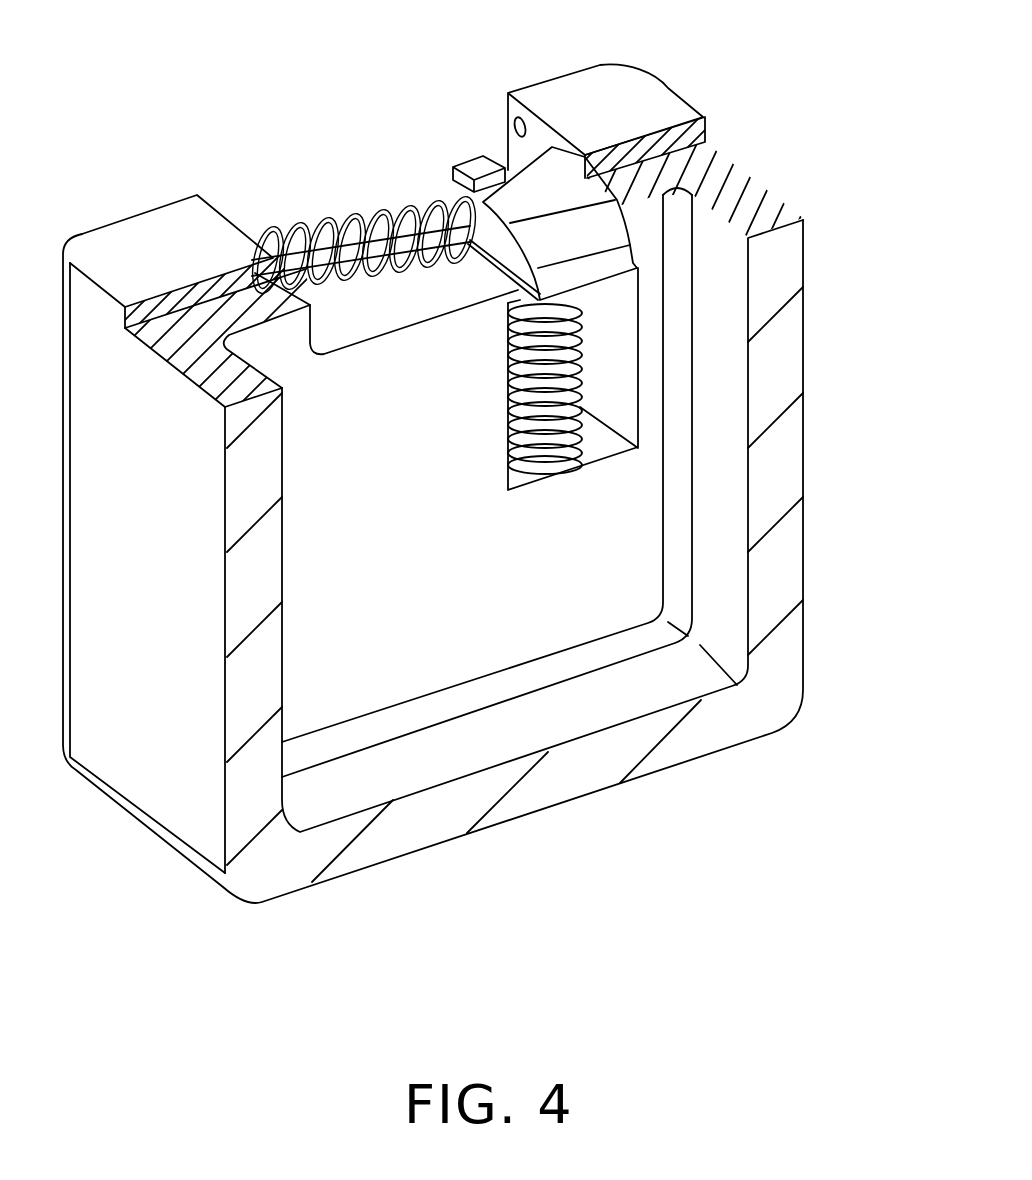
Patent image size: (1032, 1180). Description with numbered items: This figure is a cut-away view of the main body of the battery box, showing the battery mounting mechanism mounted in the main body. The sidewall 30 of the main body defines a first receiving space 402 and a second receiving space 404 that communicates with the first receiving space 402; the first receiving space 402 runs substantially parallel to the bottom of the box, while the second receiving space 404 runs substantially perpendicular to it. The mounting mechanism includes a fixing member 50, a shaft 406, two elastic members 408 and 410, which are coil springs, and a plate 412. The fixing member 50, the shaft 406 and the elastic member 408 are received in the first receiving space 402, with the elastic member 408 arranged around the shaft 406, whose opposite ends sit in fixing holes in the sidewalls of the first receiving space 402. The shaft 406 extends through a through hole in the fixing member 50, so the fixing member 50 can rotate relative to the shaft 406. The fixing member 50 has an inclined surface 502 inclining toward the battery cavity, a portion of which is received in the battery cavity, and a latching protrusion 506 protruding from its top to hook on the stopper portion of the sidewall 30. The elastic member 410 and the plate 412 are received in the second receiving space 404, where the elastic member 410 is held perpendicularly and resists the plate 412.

The sidewall 30 is at (168, 230).
The first receiving space 402 is at (380, 308).
The second receiving space 404 is at (610, 410).
The shaft 406 is at (403, 203).
The elastic member 408 is at (312, 217).
The elastic member 410 is at (583, 370).
The plate 412 is at (508, 305).
The fixing member 50 is at (550, 180).
The inclined surface 502 is at (583, 225).
The latching protrusion 506 is at (478, 166).